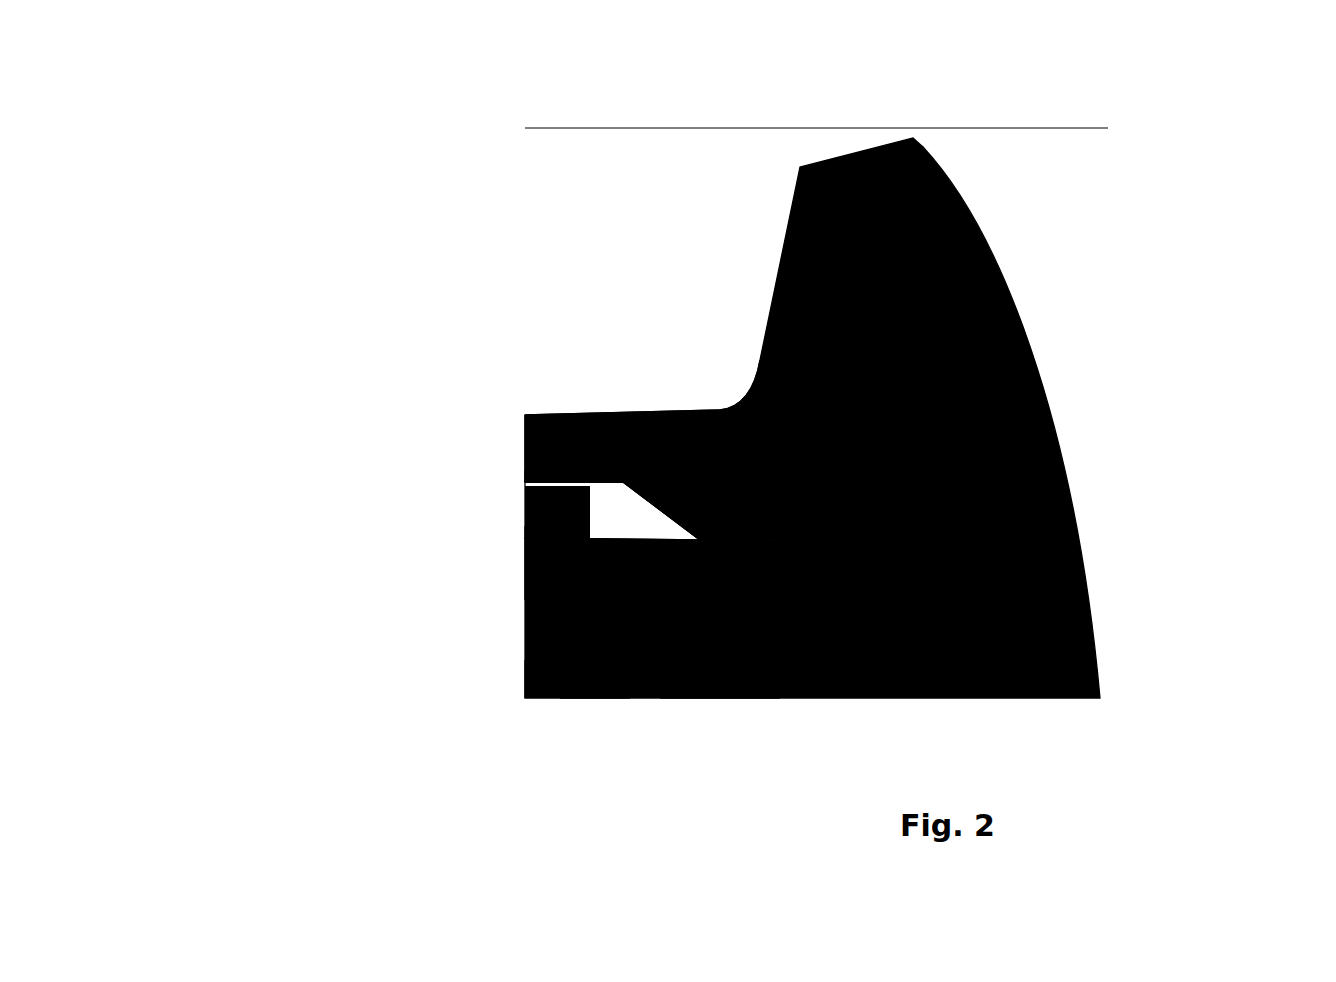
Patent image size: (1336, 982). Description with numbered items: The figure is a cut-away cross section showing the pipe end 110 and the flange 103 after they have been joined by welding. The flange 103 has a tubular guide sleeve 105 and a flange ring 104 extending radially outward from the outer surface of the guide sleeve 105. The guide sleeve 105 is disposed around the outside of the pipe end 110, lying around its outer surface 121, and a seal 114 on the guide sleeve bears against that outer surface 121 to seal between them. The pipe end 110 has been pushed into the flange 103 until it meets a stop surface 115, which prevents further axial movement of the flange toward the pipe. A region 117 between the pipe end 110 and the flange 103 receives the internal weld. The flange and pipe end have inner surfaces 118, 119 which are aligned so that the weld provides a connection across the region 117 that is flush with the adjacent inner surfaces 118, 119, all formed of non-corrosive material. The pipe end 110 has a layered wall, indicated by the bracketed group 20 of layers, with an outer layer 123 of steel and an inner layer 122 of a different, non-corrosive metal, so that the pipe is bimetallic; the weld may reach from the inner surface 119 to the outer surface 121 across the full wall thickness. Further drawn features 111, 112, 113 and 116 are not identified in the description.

The layered sealing structure 20 is at (520, 482).
The flange 103 is at (710, 405).
The flange ring 104 is at (865, 200).
The tubular guide sleeve 105 is at (542, 443).
The pipe end 110 is at (583, 487).
The first seal layer 111 is at (525, 548).
The second seal layer 112 is at (525, 580).
The bottom support 113 is at (595, 698).
The seal 114 is at (540, 475).
The stop surface 115 is at (625, 482).
The tread band 116 is at (740, 698).
The region 117 is at (525, 688).
The inner surface of the flange 118 is at (1093, 637).
The inner surface of the pipe end 119 is at (688, 698).
The outer surface of the pipe end 121 is at (590, 480).
The inner layer 122 is at (525, 533).
The outer layer 123 is at (535, 472).